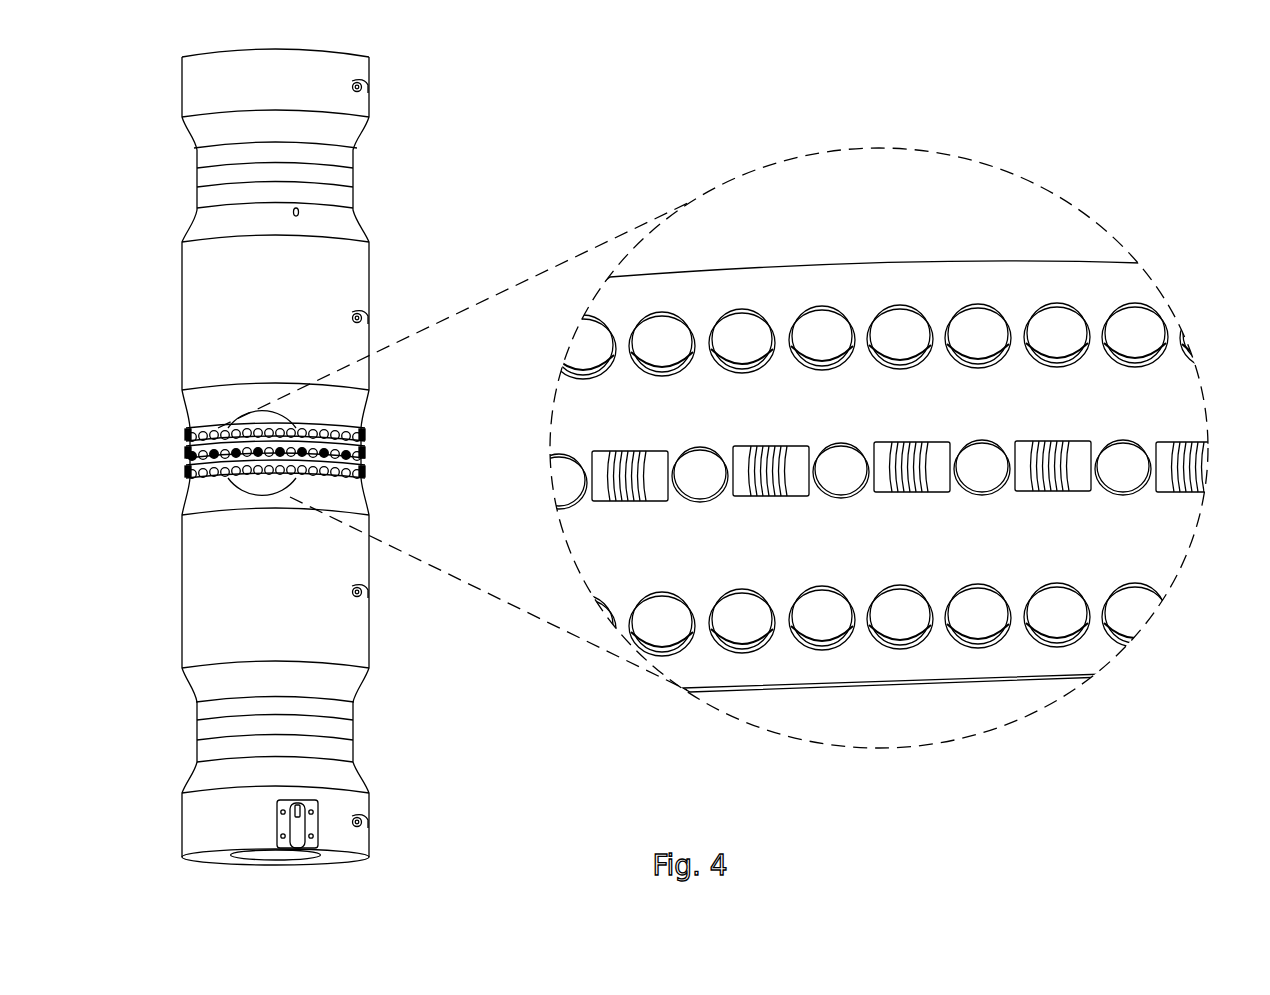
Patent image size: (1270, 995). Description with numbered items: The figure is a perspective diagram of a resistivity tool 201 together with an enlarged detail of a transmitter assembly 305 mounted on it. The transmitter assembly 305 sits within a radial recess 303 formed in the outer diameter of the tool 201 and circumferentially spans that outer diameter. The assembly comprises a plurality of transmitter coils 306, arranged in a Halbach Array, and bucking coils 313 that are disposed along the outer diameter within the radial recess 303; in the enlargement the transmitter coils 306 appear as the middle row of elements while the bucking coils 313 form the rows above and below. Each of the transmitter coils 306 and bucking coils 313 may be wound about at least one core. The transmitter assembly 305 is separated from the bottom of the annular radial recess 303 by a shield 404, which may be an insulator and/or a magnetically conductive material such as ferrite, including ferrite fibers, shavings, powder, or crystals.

The resistivity tool 201 is at (146, 222).
The radial recess 303 is at (205, 428).
The transmitter assembly 305 is at (178, 428).
The transmitter coils 306 is at (1125, 465).
The bucking coils 313 is at (190, 430).
The shield 404 is at (1025, 655).